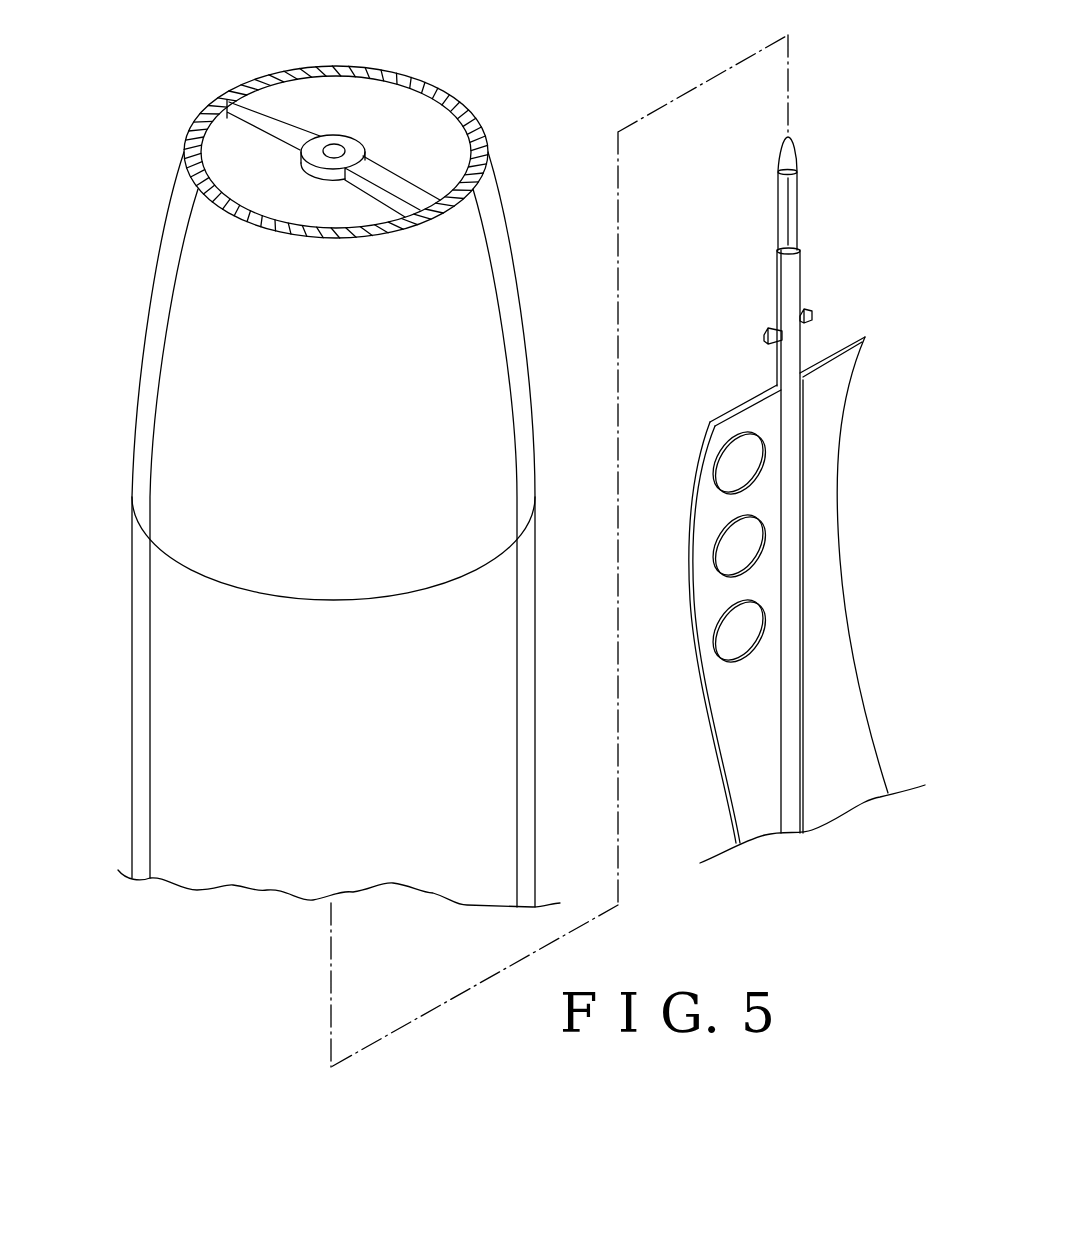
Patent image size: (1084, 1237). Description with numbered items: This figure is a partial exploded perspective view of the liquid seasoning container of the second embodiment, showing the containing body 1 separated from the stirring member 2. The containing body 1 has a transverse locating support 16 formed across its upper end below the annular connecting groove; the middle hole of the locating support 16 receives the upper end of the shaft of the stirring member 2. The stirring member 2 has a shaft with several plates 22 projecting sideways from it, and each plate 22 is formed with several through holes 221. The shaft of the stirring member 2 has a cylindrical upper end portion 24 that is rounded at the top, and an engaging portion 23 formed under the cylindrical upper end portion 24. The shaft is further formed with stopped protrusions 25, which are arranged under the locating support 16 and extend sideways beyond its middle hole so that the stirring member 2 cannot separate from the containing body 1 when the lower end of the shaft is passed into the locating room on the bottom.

The containing body 1 is at (133, 388).
The transverse locating support 16 is at (336, 150).
The stirring member 2 is at (770, 368).
The plate 22 is at (830, 427).
The through holes 221 is at (738, 545).
The engaging portion 23 is at (793, 220).
The cylindrical upper end portion 24 is at (797, 152).
The stopped protrusions 25 is at (813, 312).